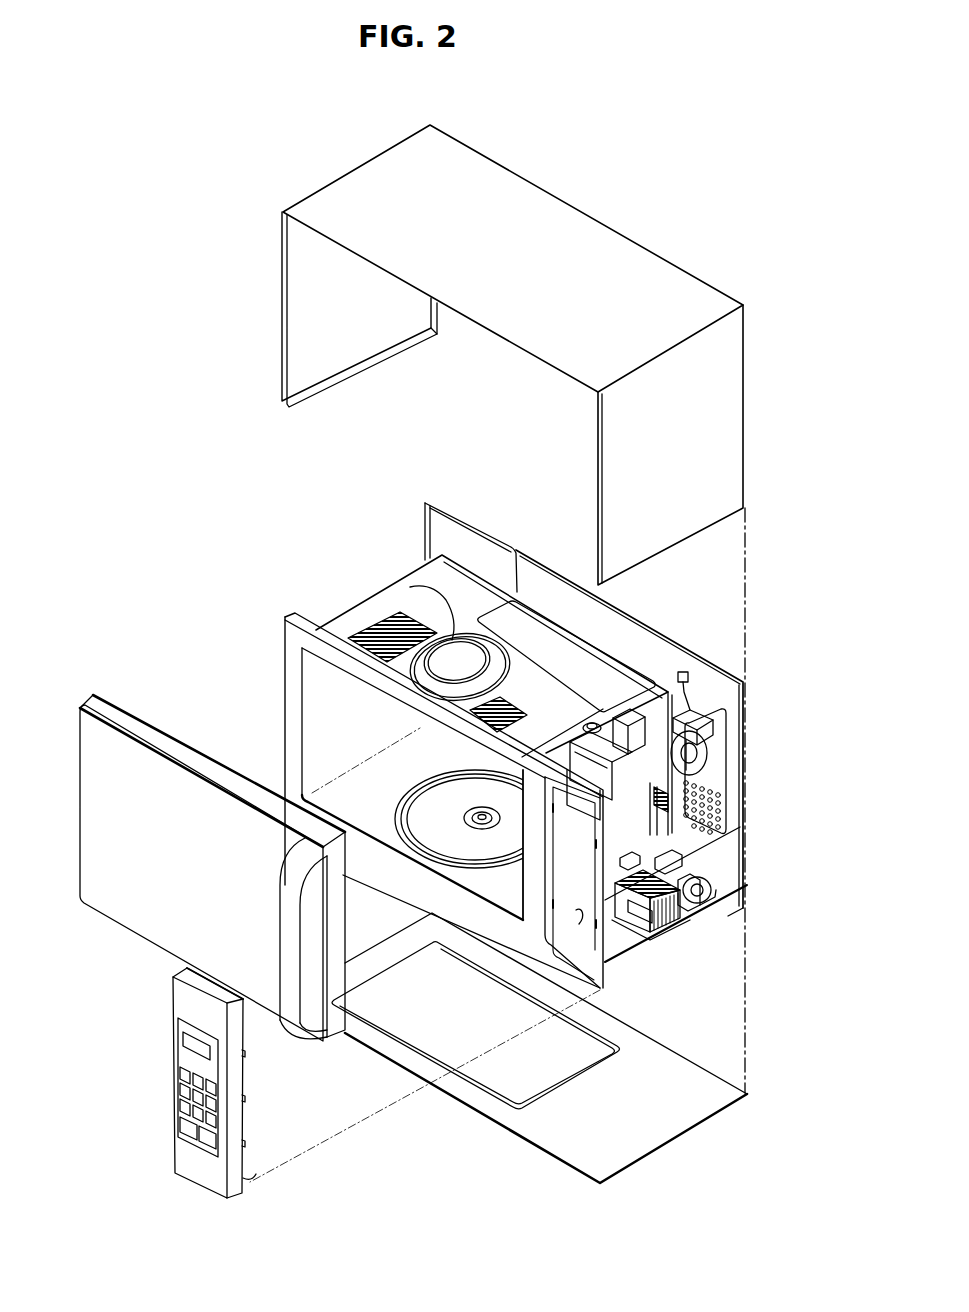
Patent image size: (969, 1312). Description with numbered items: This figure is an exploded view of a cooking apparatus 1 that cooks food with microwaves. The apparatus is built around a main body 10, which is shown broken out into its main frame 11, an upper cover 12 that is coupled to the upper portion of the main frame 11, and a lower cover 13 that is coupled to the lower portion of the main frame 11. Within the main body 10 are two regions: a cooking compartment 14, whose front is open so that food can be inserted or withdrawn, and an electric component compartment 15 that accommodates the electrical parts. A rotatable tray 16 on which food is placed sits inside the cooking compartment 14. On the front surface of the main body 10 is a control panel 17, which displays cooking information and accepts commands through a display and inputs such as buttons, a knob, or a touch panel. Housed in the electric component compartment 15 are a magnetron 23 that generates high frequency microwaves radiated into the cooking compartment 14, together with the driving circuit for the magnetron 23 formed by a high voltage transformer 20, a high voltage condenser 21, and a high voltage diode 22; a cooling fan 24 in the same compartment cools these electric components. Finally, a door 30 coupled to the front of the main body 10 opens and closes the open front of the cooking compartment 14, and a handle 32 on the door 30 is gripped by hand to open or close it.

The cooking apparatus 1 is at (117, 374).
The main body 10 is at (274, 593).
The main frame 11 is at (288, 638).
The upper cover 12 is at (662, 272).
The lower cover 13 is at (714, 1102).
The cooking compartment 14 is at (355, 790).
The electric component compartment 15 is at (545, 928).
The tray 16 is at (447, 840).
The control panel 17 is at (180, 1152).
The high voltage transformer 20 is at (672, 918).
The high voltage condenser 21 is at (710, 882).
The high voltage diode 22 is at (665, 851).
The magnetron 23 is at (650, 712).
The cooling fan 24 is at (703, 764).
The door 30 is at (90, 806).
The handle 32 is at (293, 1013).